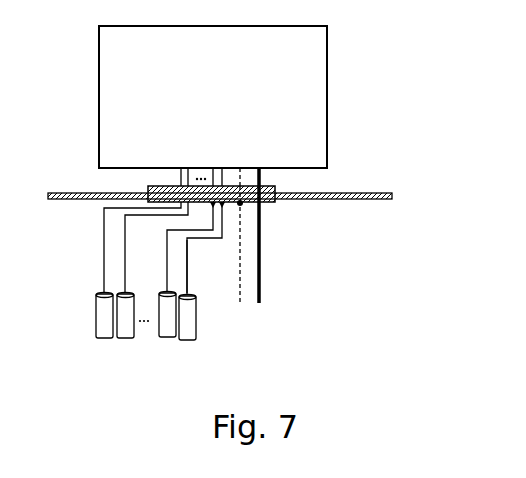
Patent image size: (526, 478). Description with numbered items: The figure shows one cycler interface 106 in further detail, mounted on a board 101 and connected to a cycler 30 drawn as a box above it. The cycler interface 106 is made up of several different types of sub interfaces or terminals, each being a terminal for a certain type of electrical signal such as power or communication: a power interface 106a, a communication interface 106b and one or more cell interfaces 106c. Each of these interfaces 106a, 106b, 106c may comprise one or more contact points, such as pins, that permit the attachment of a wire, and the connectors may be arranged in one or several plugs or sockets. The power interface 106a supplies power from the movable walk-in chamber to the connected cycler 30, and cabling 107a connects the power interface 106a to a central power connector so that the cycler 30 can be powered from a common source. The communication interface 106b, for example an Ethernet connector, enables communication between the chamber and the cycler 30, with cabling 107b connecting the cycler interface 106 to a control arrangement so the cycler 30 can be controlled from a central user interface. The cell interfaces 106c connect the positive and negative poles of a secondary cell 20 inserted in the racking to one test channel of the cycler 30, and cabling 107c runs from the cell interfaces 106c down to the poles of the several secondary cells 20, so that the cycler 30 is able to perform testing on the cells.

The cycler 30 is at (142, 60).
The circuit board 101 is at (79, 241).
The cycler interface 106 is at (273, 188).
The power interface 106a is at (248, 208).
The communication interface 106b is at (266, 207).
The cell interface 106c is at (182, 209).
The cabling 107a is at (263, 263).
The cabling 107b is at (243, 279).
The cabling 107c is at (191, 258).
The secondary cell 20 is at (94, 325).